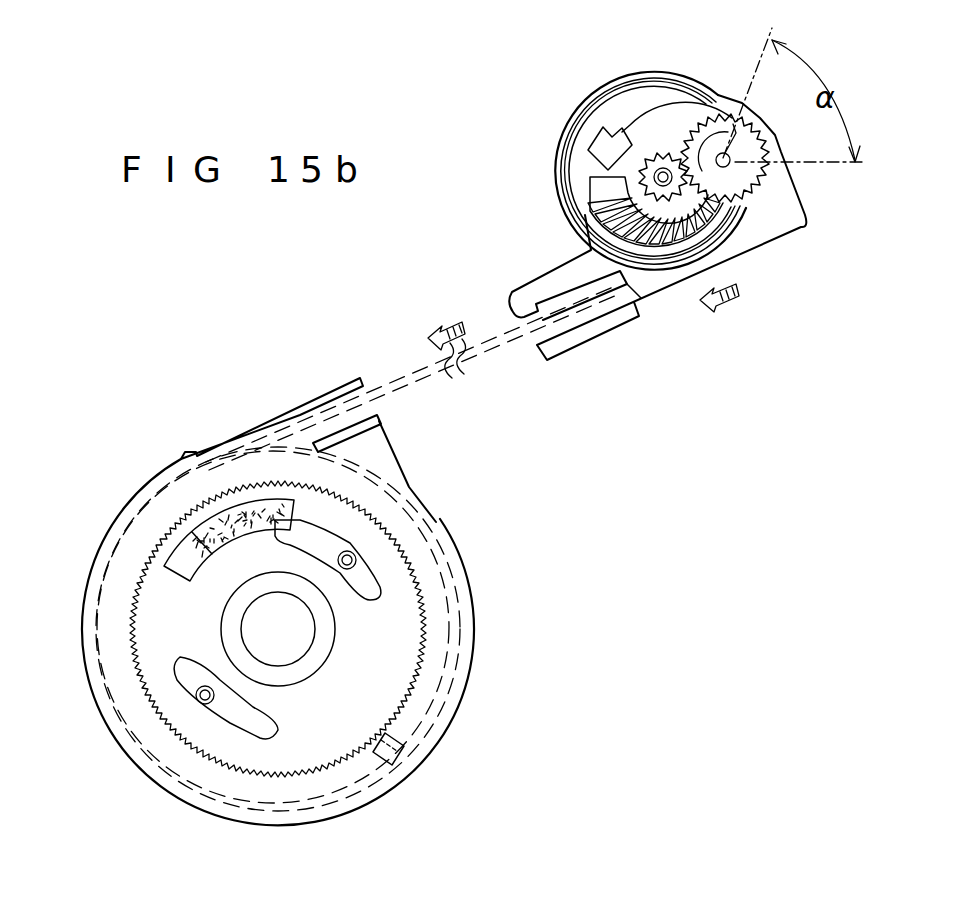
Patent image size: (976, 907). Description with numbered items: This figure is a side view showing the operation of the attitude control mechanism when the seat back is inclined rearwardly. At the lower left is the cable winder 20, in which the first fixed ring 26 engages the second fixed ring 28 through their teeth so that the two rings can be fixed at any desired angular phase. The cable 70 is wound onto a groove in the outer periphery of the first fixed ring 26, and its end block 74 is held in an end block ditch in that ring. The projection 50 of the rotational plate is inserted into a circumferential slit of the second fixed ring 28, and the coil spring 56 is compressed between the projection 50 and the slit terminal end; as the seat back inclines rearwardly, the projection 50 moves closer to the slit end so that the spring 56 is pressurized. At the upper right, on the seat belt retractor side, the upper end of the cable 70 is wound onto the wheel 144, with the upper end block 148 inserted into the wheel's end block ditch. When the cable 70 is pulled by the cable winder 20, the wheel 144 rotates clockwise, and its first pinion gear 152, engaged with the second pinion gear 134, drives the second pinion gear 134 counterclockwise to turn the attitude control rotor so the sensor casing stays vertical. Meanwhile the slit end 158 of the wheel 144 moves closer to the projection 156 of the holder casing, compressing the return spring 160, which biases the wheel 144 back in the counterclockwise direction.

The cable winder 20 is at (90, 752).
The first fixed ring 26 is at (427, 675).
The second fixed ring 28 is at (400, 612).
The projection 50 is at (180, 547).
The coil spring 56 is at (233, 477).
The cable 70 is at (473, 377).
The end block 74 is at (403, 760).
The second pinion gear 134 is at (750, 153).
The wheel 144 is at (633, 88).
The upper end block 148 is at (590, 150).
The first pinion gear 152 is at (640, 187).
The projection 156 is at (600, 245).
The slit end 158 is at (707, 200).
The return spring 160 is at (682, 248).